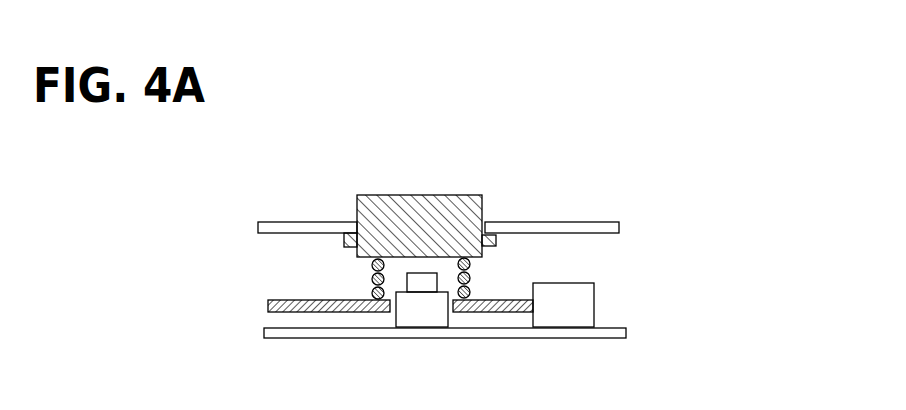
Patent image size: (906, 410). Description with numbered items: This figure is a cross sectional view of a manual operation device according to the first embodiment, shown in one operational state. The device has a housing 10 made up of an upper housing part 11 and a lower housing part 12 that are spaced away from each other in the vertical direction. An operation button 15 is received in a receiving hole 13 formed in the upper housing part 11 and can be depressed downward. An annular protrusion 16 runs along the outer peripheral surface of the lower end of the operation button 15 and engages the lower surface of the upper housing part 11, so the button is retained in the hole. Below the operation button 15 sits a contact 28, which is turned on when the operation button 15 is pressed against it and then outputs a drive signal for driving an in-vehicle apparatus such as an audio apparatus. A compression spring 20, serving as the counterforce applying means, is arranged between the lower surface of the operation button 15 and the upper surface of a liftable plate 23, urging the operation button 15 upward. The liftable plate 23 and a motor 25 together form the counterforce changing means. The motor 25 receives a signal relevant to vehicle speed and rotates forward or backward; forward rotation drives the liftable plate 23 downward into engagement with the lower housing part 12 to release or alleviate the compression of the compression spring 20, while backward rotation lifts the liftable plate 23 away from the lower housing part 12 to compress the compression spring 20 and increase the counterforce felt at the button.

The housing 10 is at (643, 262).
The upper housing part 11 is at (581, 226).
The lower housing part 12 is at (611, 334).
The receiving hole 13 is at (485, 208).
The operation button 15 is at (431, 194).
The annular protrusion 16 is at (497, 238).
The compression spring 20 is at (373, 277).
The liftable plate 23 is at (268, 302).
The motor 25 is at (584, 304).
The contact 28 is at (411, 313).